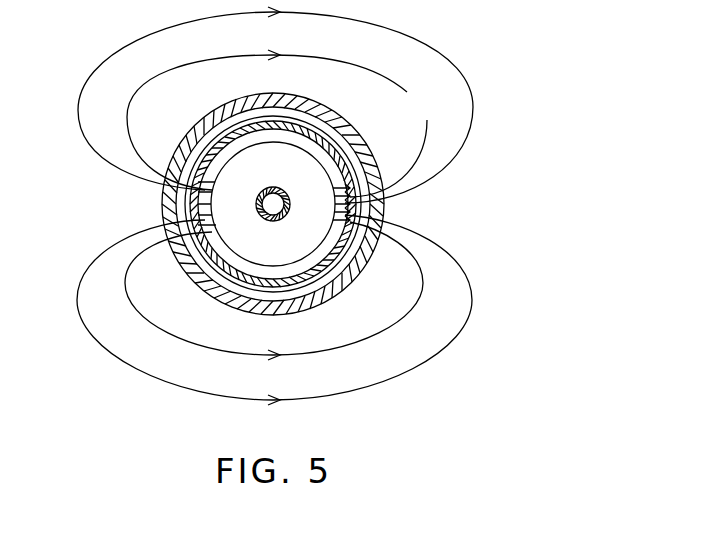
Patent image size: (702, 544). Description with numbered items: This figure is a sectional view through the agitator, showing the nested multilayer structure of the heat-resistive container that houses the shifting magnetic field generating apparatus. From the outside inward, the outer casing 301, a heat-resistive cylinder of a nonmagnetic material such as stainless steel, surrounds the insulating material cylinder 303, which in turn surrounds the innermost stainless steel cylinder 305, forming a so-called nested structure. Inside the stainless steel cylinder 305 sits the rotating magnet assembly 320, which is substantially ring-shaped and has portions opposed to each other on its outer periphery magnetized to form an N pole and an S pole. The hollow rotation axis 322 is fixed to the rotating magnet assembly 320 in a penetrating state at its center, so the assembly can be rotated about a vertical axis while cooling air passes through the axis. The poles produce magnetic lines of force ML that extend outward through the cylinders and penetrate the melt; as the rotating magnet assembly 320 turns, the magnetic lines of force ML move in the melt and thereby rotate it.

The magnetic lines of force ML is at (353, 63).
The outer casing 301 is at (217, 115).
The insulating material cylinder 303 is at (345, 140).
The stainless steel cylinder 305 is at (280, 113).
The rotating magnet assembly 320 is at (292, 243).
The hollow rotation axis 322 is at (271, 222).